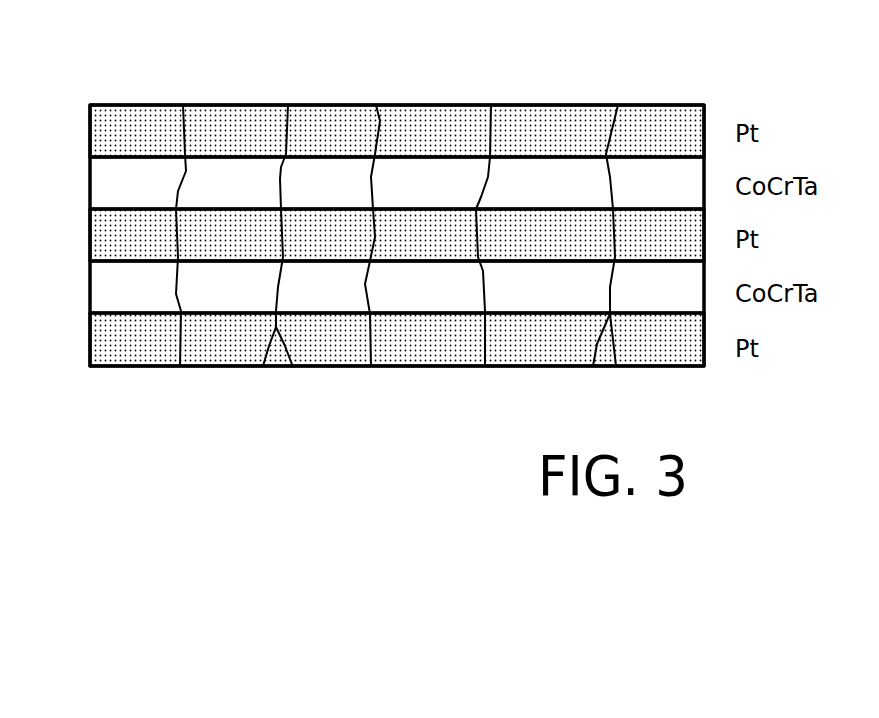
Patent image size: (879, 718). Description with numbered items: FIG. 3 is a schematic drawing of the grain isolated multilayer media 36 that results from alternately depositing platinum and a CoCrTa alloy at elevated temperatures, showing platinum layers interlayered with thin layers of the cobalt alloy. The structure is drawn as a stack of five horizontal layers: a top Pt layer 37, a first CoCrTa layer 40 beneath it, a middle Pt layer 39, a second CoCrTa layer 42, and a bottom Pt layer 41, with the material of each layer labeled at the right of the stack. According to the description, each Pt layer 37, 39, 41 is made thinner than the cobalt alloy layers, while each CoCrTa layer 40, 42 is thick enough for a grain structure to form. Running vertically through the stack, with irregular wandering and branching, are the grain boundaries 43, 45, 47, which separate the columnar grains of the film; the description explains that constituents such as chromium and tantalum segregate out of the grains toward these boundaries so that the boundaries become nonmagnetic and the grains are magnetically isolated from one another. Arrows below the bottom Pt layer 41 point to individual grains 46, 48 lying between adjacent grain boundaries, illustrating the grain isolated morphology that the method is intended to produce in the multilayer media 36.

The multilayer magnetic recording structure 36 is at (682, 43).
The first Pt layer 37 is at (97, 128).
The first CoCrTa magnetic layer 40 is at (93, 178).
The second Pt layer 39 is at (96, 228).
The second CoCrTa magnetic layer 42 is at (96, 288).
The third Pt layer 41 is at (96, 345).
The grain boundary 43 is at (277, 175).
The grain boundary 45 is at (367, 173).
The grain boundary 47 is at (483, 175).
The grain 46 is at (322, 387).
The grain 48 is at (424, 385).